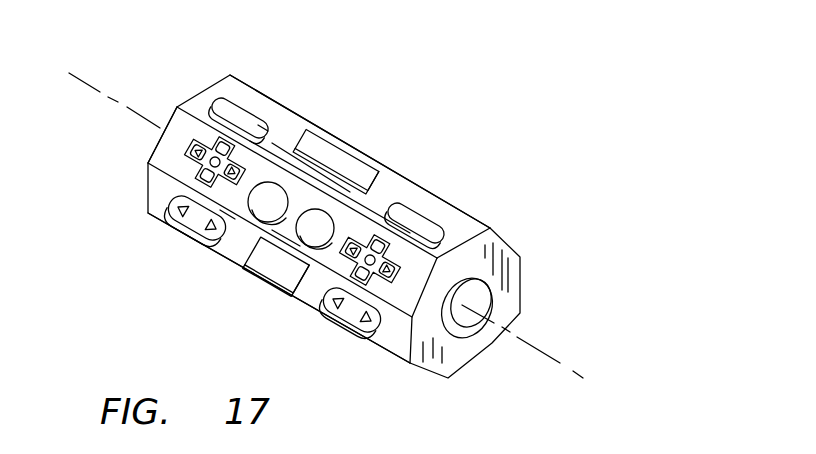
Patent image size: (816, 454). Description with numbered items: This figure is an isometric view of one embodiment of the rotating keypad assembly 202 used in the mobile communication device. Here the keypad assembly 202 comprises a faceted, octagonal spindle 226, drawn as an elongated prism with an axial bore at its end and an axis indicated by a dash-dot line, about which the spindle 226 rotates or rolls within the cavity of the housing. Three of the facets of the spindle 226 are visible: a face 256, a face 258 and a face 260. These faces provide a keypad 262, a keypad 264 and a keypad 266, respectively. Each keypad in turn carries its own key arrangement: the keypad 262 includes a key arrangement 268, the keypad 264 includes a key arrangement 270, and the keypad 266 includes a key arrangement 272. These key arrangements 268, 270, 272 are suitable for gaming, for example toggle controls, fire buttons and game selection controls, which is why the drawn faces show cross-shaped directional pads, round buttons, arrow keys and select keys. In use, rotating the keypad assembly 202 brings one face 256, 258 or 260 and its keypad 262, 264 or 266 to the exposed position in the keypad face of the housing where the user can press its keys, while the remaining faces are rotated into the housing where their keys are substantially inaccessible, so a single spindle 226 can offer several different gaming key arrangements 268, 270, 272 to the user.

The keypad assembly 202 is at (540, 187).
The spindle 226 is at (510, 282).
The face 256 is at (392, 340).
The face 258 is at (168, 138).
The face 260 is at (393, 185).
The keypad 262 is at (315, 300).
The keypad 264 is at (170, 160).
The keypad 266 is at (285, 127).
The key arrangement 268 is at (248, 268).
The key arrangement 270 is at (217, 147).
The key arrangement 272 is at (353, 150).